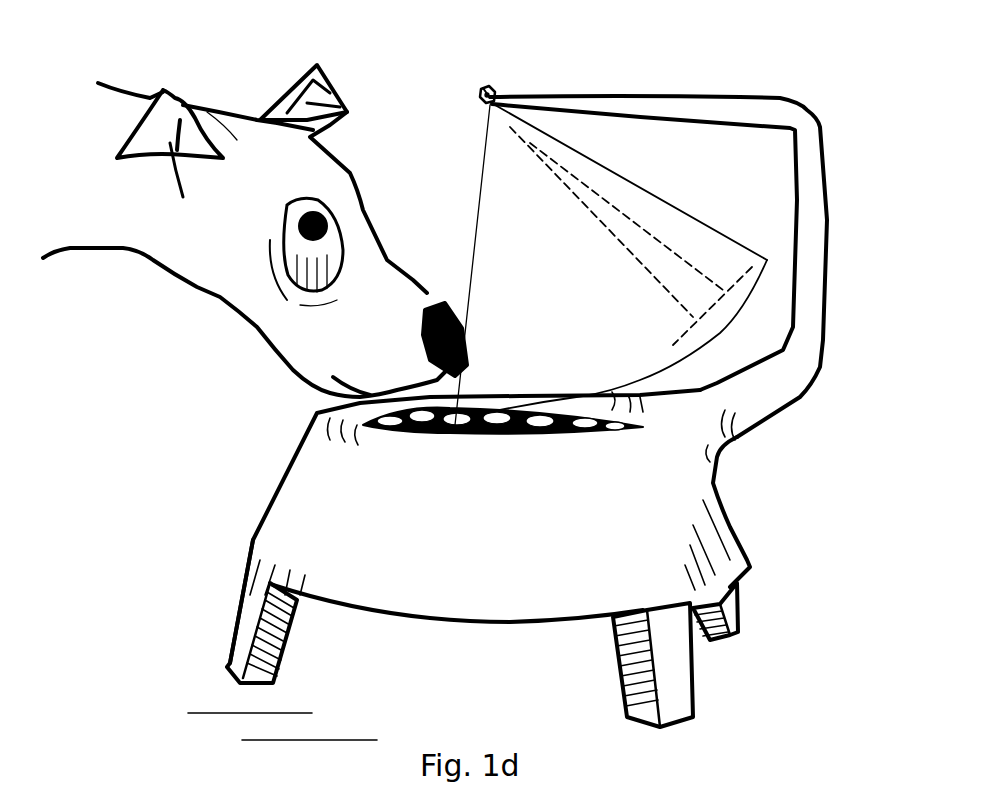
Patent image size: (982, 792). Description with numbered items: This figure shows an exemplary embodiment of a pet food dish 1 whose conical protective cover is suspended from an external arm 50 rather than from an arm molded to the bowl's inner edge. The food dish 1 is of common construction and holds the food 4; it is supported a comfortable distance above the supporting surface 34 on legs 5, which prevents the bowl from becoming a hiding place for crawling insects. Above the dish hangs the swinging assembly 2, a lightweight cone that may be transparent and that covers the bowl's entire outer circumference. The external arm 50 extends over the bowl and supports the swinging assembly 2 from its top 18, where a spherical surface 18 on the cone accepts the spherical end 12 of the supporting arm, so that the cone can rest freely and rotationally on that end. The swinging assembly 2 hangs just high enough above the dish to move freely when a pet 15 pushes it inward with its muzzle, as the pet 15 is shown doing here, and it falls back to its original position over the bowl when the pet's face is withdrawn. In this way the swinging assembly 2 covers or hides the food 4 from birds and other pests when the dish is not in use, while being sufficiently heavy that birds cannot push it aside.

The food dish 1 is at (483, 537).
The swinging assembly 2 is at (470, 220).
The food 4 is at (455, 425).
The legs 5 is at (233, 625).
The spherical end 12 is at (483, 87).
The pet 15 is at (213, 323).
The spherical surface 18 is at (500, 90).
The supporting surface 34 is at (393, 711).
The external arm 50 is at (750, 95).